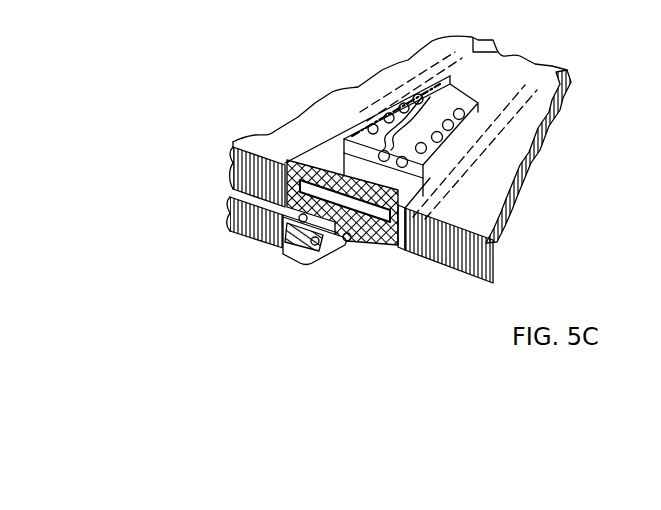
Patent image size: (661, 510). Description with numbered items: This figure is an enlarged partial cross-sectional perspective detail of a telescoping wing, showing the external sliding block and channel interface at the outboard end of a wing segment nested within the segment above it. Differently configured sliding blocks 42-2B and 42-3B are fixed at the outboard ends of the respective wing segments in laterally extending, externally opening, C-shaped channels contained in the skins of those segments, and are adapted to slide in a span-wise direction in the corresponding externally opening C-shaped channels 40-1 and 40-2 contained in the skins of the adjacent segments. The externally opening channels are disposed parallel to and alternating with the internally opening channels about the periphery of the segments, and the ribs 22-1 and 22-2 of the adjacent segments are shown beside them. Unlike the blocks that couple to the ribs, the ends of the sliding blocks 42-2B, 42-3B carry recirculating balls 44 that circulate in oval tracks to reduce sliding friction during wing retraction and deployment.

The recirculating balls 44 is at (375, 120).
The C-shaped channel 40-2 is at (352, 168).
The C-shaped channel 40-1 is at (288, 254).
The rib 22-2 is at (233, 184).
The rib 22-1 is at (248, 233).
The sliding block 42-2B is at (381, 250).
The sliding block 42-3B is at (480, 103).